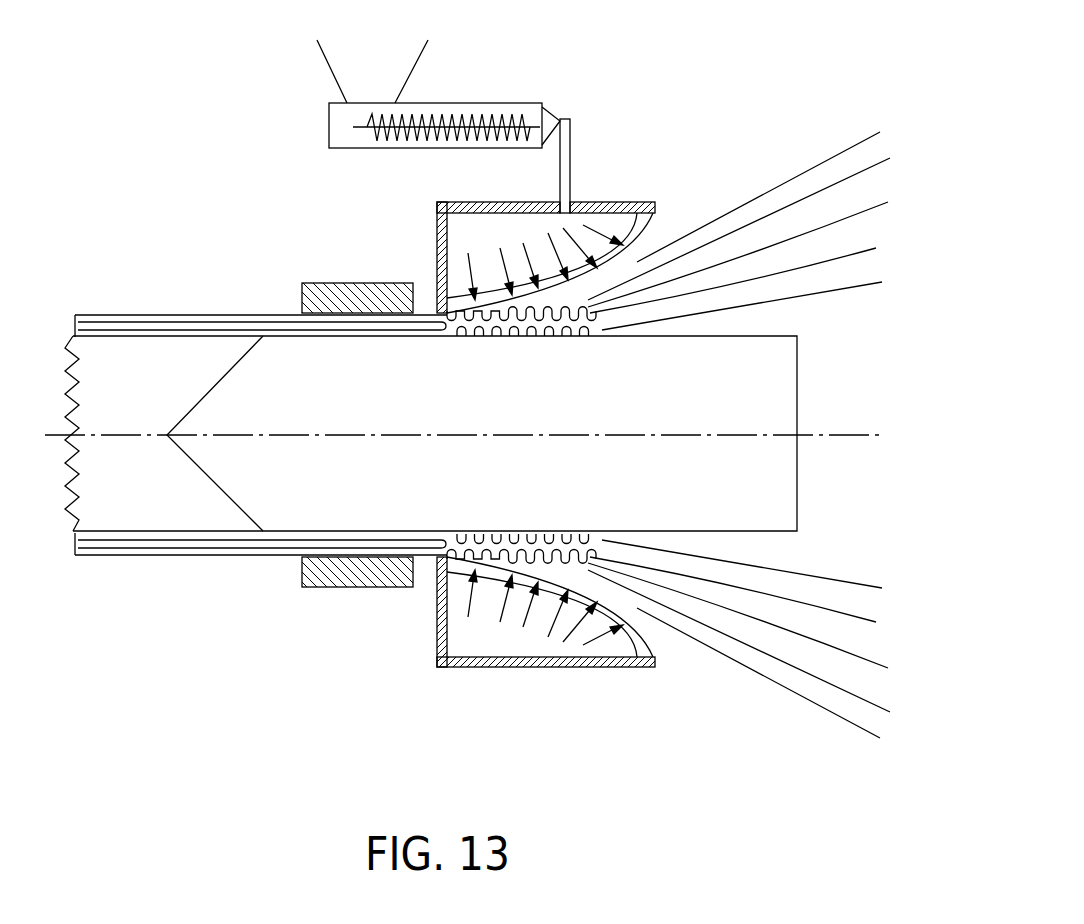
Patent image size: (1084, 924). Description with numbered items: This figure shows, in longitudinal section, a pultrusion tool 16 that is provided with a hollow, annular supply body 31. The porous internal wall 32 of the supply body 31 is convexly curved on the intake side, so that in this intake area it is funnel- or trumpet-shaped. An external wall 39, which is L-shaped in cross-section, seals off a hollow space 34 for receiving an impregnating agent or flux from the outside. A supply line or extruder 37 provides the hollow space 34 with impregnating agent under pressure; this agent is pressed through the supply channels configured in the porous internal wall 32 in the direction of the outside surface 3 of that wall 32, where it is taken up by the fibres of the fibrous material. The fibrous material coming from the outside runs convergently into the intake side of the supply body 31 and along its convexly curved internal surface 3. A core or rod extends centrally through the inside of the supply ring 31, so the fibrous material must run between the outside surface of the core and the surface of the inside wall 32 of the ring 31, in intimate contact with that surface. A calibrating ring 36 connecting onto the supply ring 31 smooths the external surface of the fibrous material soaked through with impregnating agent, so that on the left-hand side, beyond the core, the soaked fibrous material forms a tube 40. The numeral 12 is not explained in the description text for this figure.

The outside surface 3 is at (653, 217).
The wire 12 is at (797, 483).
The pultrusion tool 16 is at (221, 673).
The supply body 31 is at (480, 684).
The porous internal wall 32 is at (648, 668).
The hollow space 34 is at (447, 645).
The calibrating ring 36 is at (300, 296).
The extruder 37 is at (430, 143).
The external wall 39 is at (555, 666).
The tube 40 is at (107, 557).